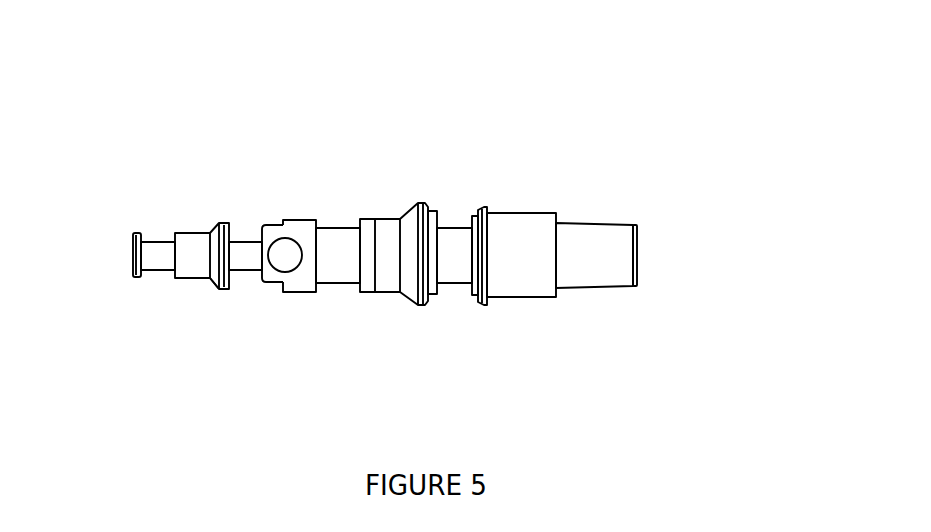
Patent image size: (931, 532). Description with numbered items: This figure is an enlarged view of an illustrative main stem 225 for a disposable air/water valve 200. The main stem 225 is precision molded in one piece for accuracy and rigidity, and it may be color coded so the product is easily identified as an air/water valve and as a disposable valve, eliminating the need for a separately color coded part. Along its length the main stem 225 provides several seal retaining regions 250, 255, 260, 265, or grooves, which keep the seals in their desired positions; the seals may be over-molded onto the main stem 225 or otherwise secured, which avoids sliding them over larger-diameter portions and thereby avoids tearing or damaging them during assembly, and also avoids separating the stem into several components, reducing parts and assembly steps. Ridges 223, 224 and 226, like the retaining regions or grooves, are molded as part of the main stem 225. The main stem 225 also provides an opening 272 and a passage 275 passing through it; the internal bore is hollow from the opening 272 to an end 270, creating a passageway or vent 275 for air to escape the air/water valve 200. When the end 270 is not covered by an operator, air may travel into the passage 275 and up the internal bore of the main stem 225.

The disposable air/water valve 200 is at (427, 235).
The ridge 223 is at (482, 307).
The ridge 224 is at (418, 308).
The main stem 225 is at (360, 318).
The ridge 226 is at (218, 283).
The seal retaining region 250 is at (157, 237).
The seal retaining region 255 is at (245, 238).
The seal retaining region 260 is at (339, 227).
The seal retaining region 265 is at (454, 227).
The end 270 is at (593, 222).
The opening 272 is at (285, 257).
The passage 275 is at (637, 252).